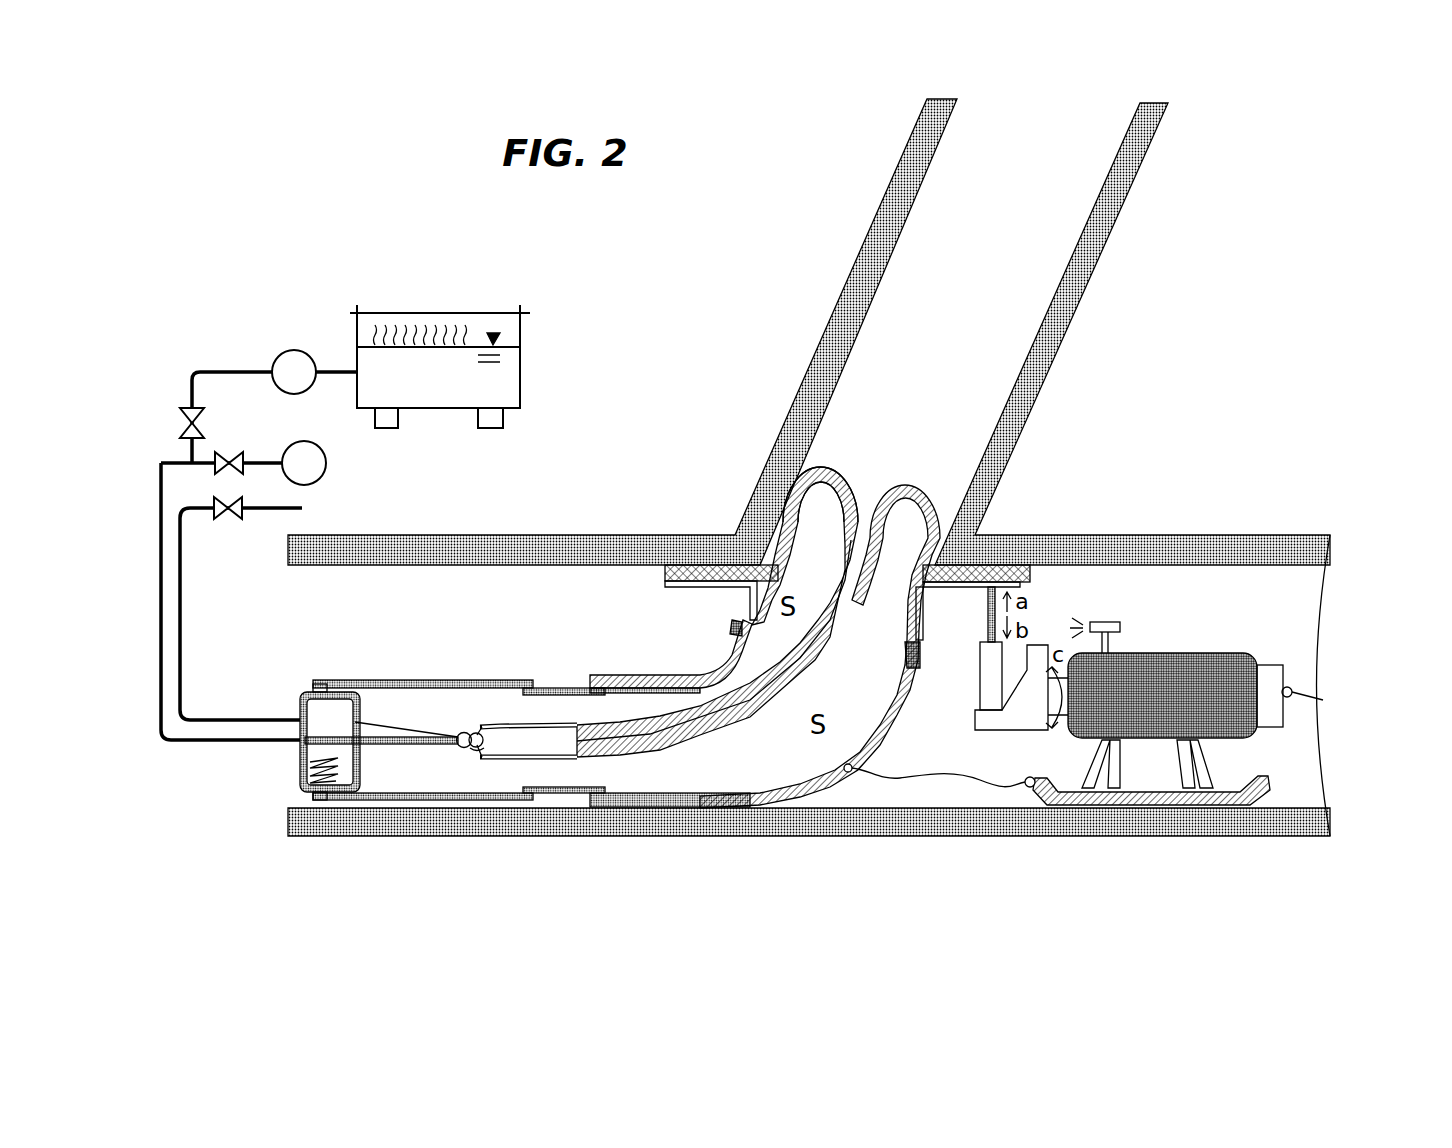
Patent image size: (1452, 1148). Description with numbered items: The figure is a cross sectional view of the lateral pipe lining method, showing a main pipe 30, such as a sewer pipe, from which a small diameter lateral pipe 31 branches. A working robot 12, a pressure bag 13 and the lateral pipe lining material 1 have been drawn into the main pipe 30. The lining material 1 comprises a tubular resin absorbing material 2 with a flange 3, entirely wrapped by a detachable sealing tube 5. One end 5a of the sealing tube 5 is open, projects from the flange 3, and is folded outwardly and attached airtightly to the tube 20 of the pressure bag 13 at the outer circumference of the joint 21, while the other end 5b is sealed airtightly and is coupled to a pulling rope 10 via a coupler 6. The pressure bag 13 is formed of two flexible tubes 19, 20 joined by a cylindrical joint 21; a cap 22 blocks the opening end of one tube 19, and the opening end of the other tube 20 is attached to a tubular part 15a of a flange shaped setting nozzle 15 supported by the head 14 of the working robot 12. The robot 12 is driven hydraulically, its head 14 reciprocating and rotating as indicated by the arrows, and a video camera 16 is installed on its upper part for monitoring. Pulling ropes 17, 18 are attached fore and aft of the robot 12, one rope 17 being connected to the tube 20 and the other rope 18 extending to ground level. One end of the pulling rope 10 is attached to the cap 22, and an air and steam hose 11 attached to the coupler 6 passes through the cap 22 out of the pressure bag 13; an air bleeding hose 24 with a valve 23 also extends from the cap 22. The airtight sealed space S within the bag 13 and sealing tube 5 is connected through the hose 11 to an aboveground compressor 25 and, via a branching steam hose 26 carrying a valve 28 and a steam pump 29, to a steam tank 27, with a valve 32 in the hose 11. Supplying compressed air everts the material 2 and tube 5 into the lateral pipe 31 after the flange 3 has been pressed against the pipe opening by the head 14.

The lateral pipe lining material 1 is at (915, 461).
The tubular resin absorbing material 2 is at (830, 464).
The flange 3 is at (665, 572).
The sealing tube 5 is at (546, 727).
The open end of sealing tube 5a is at (585, 680).
The sealed end of sealing tube 5b is at (477, 733).
The coupler 6 is at (477, 750).
The pulling rope 10 is at (380, 722).
The air and steam hose 11 is at (215, 744).
The working robot 12 is at (1230, 658).
The pressure bag 13 is at (494, 664).
The head 14 is at (975, 722).
The setting nozzle 15 is at (958, 593).
The tubular part 15a is at (747, 610).
The video camera 16 is at (1123, 627).
The pulling rope 17 is at (887, 773).
The pulling rope 18 is at (1290, 688).
The flexible tube 19 is at (417, 678).
The tube 20 is at (620, 673).
The cylindrical joint 21 is at (563, 796).
The cap 22 is at (297, 698).
The valve 23 is at (228, 514).
The air bleeding hose 24 is at (182, 630).
The compressor 25 is at (328, 466).
The steam hose 26 is at (214, 370).
The steam tank 27 is at (524, 372).
The valve 28 is at (204, 418).
The steam pump 29 is at (297, 349).
The main pipe 30 is at (1117, 823).
The lateral pipe 31 is at (1083, 320).
The valve 32 is at (241, 452).